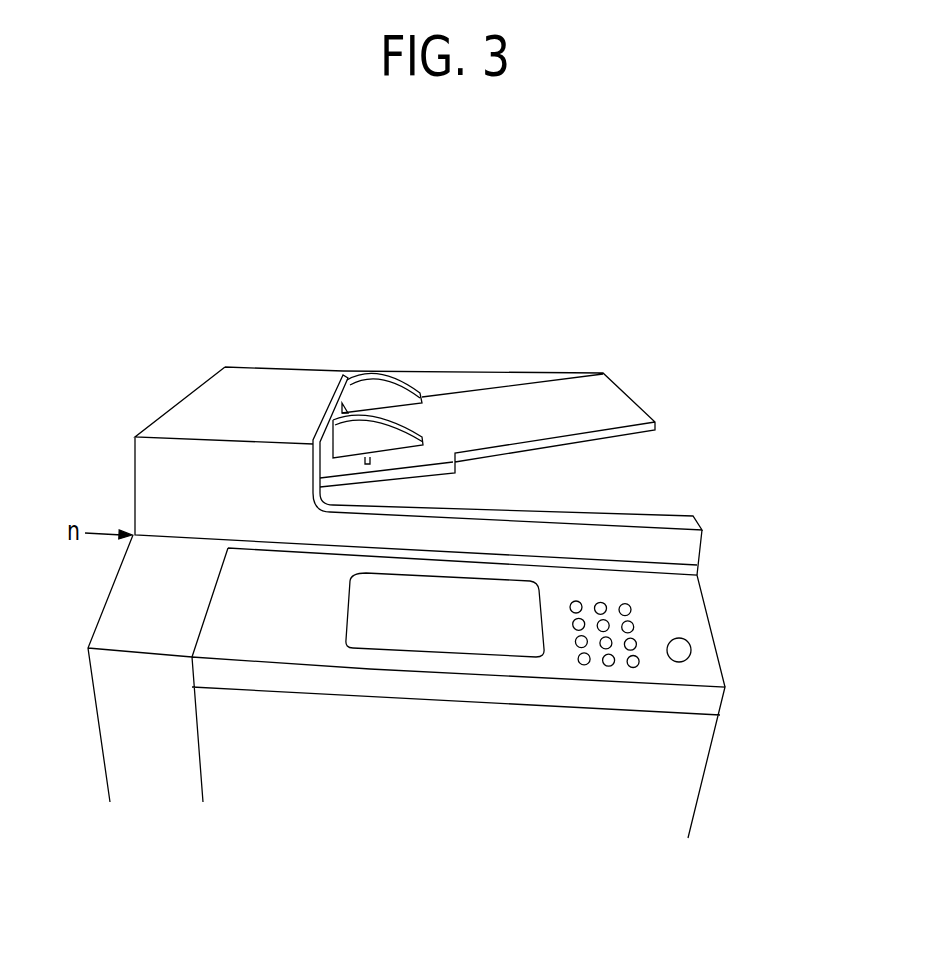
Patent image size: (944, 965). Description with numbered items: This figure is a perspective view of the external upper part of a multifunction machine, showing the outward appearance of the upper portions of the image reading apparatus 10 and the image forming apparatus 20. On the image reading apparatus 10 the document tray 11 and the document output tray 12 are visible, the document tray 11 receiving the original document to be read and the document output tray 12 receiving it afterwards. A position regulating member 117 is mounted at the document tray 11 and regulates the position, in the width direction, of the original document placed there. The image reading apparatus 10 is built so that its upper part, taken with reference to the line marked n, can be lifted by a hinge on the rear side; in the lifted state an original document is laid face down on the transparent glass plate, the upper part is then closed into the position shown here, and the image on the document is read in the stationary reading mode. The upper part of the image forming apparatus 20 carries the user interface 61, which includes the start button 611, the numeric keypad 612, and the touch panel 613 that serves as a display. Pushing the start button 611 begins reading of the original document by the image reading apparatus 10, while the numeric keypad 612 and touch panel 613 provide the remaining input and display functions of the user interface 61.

The image reading apparatus 10 is at (542, 342).
The document tray 11 is at (593, 391).
The document output tray 12 is at (625, 487).
The position regulating member 117 is at (372, 432).
The image forming apparatus 20 is at (785, 598).
The user interface 61 is at (697, 604).
The start button 611 is at (684, 653).
The numeric keypad 612 is at (633, 620).
The touch panel 613 is at (512, 610).